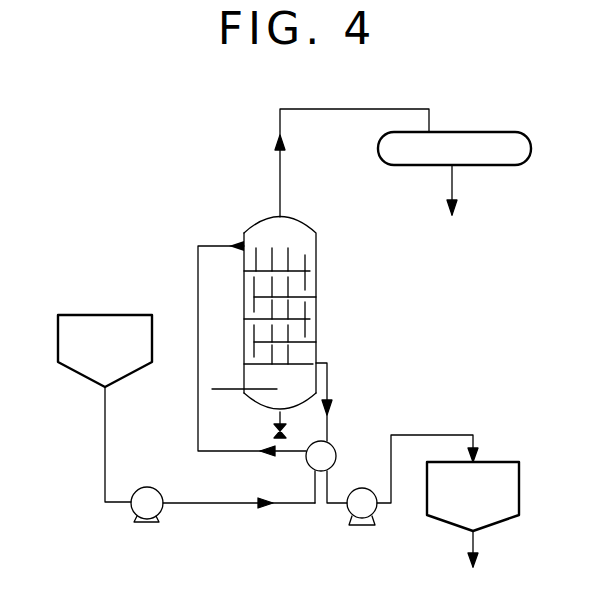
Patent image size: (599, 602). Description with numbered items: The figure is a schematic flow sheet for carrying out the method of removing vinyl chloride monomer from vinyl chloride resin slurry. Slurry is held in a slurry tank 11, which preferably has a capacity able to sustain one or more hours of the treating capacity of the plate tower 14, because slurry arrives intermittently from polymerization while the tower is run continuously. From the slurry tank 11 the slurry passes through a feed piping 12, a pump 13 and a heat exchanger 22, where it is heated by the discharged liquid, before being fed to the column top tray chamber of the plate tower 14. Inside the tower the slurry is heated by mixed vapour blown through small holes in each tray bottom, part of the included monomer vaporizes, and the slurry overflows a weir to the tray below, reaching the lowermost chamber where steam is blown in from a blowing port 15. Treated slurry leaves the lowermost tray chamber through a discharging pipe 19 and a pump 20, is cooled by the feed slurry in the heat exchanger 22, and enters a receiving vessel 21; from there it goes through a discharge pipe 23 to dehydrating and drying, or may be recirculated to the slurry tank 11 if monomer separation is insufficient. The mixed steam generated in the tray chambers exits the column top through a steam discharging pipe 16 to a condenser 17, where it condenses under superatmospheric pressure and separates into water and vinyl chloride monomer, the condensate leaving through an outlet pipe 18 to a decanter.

The slurry tank 11 is at (58, 330).
The feed piping 12 is at (105, 454).
The pump 13 is at (157, 510).
The plate tower 14 is at (304, 281).
The blowing port 15 is at (236, 390).
The steam discharging pipe 16 is at (280, 172).
The condenser 17 is at (478, 142).
The outlet pipe 18 is at (456, 185).
The discharging pipe 19 is at (328, 387).
The pump 20 is at (353, 512).
The receiving vessel 21 is at (519, 480).
The heat exchanger 22 is at (333, 454).
The discharge pipe 23 is at (476, 544).